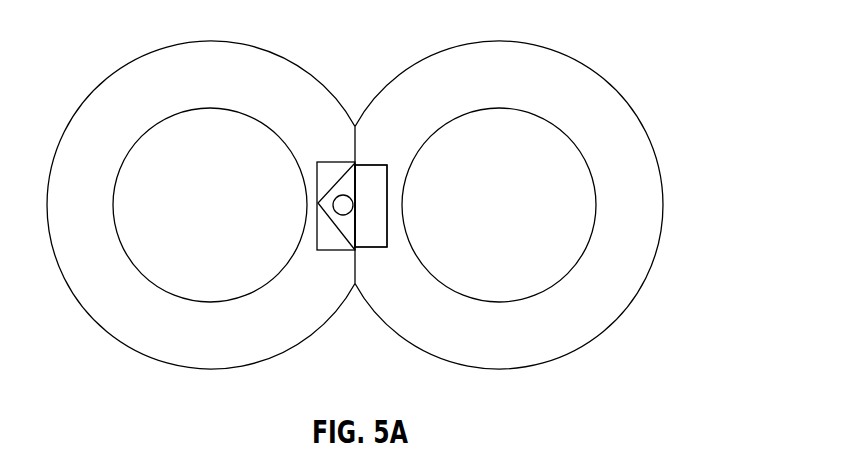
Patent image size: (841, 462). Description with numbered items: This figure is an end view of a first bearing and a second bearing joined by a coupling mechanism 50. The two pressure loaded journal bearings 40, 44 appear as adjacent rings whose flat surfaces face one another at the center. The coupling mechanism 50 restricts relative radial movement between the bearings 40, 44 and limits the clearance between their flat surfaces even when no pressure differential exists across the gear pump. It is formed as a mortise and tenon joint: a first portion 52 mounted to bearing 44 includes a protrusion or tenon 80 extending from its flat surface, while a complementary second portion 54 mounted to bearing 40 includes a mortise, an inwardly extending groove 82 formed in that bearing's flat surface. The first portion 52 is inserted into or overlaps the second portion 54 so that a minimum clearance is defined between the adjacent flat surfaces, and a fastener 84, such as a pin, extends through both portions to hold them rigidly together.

The pressure loaded journal bearing 40 is at (213, 347).
The pressure loaded journal bearing 44 is at (627, 157).
The coupling mechanism 50 is at (357, 104).
The first portion 52 is at (380, 152).
The second portion 54 is at (328, 152).
The protrusion 80 is at (368, 222).
The groove 82 is at (330, 238).
The fastener 84 is at (334, 208).